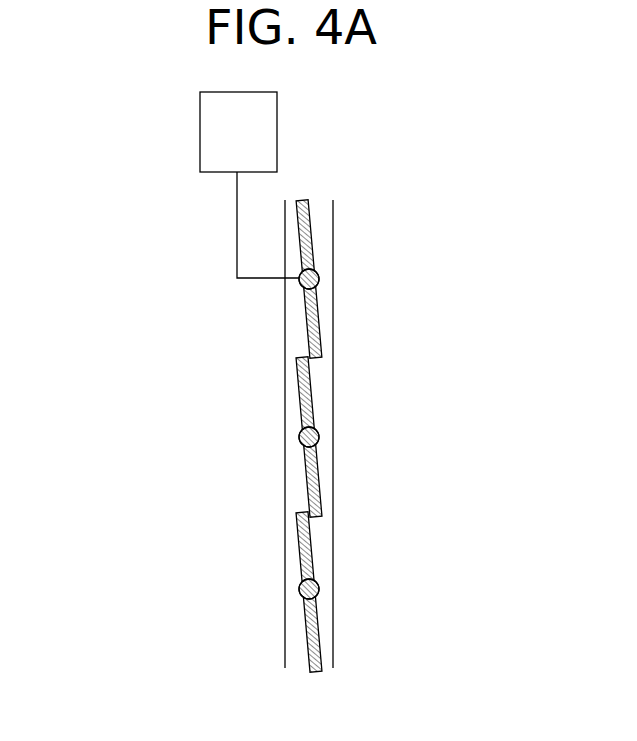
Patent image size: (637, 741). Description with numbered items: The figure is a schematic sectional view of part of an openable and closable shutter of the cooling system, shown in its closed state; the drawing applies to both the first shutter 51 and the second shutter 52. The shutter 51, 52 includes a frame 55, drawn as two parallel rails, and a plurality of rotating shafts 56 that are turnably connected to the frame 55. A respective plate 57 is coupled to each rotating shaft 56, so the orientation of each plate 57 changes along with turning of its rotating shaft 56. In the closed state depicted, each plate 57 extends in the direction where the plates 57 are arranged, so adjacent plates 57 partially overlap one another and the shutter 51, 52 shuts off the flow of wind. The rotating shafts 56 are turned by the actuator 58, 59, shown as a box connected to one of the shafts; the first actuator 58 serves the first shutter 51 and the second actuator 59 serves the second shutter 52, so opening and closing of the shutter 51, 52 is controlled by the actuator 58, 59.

The first shutter 51 is at (372, 373).
The second shutter 52 is at (347, 207).
The frame 55 is at (302, 436).
The rotating shaft 56 is at (318, 435).
The plate 57 is at (300, 535).
The first actuator 58 is at (173, 185).
The second actuator 59 is at (213, 133).